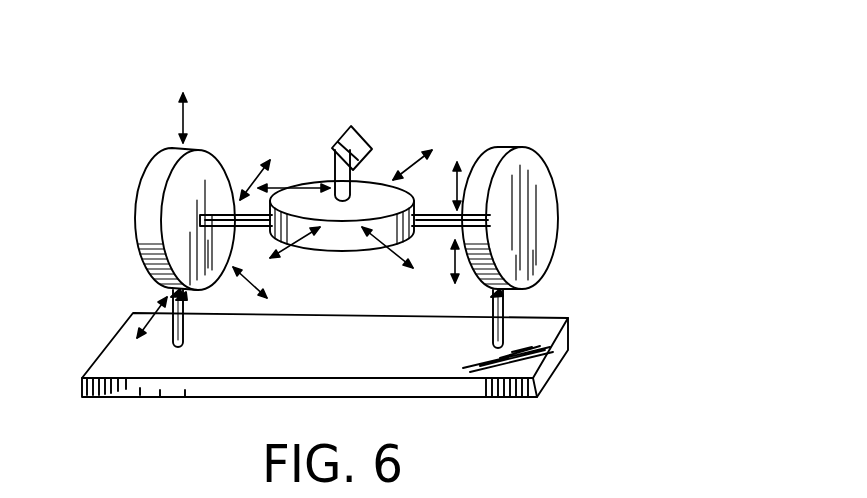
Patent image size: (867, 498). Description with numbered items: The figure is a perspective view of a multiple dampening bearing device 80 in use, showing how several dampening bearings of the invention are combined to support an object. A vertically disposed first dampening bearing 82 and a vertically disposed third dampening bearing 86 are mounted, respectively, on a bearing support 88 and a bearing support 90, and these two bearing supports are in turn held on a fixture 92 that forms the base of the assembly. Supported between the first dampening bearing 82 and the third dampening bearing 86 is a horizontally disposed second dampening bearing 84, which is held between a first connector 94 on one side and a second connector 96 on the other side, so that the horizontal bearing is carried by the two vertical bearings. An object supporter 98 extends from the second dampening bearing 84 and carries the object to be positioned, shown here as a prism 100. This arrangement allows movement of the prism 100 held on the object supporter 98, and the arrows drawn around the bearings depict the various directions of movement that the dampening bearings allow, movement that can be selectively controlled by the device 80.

The multiple dampening bearing device 80 is at (598, 120).
The first dampening bearing 82 is at (537, 173).
The second dampening bearing 84 is at (370, 185).
The third dampening bearing 86 is at (200, 150).
The bearing support 88 is at (500, 296).
The bearing support 90 is at (183, 327).
The fixture 92 is at (335, 325).
The first connector 94 is at (203, 182).
The second connector 96 is at (450, 218).
The object supporter 98 is at (335, 178).
The prism 100 is at (353, 143).